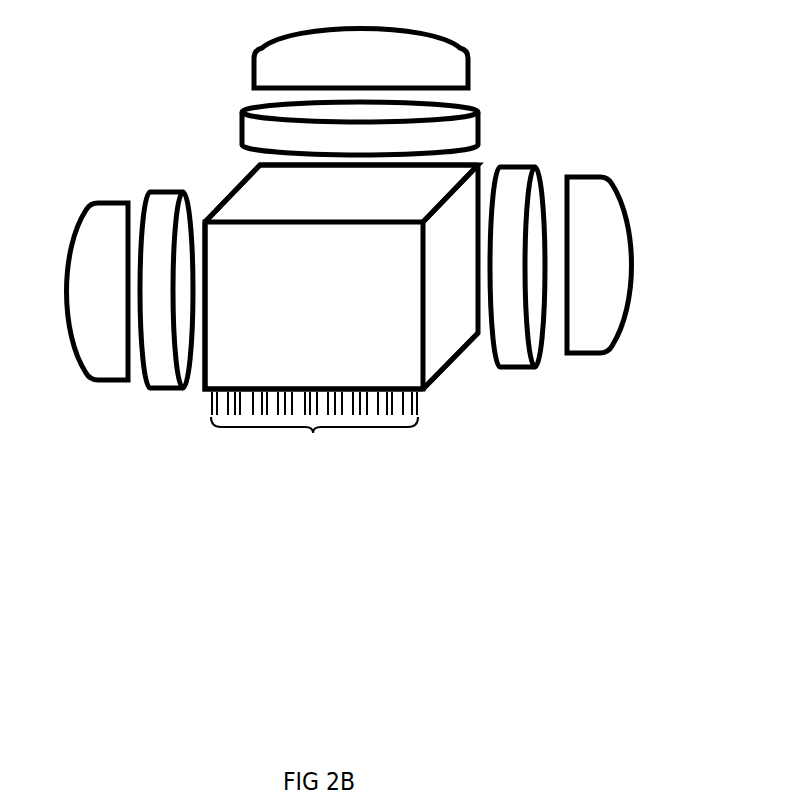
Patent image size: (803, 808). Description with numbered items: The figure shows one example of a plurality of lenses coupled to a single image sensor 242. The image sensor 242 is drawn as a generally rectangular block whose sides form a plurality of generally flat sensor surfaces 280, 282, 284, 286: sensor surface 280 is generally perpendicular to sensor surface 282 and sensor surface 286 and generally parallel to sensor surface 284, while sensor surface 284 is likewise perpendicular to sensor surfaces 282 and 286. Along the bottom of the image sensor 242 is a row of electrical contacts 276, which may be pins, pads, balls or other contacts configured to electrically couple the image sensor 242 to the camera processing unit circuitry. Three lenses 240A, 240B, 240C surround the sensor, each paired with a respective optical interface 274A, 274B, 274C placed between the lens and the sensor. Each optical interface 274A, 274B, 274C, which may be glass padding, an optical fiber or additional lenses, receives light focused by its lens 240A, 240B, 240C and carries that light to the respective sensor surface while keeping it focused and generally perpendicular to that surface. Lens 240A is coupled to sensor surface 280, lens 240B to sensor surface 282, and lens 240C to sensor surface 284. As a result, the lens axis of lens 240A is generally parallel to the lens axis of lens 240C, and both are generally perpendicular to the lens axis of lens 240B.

The lens 240A is at (630, 227).
The lens 240B is at (418, 33).
The lens 240C is at (67, 278).
The optical interface 274A is at (512, 165).
The optical interface 274B is at (482, 117).
The optical interface 274C is at (147, 200).
The image sensor 242 is at (441, 398).
The electrical contacts 276 is at (314, 427).
The sensor surface 280 is at (449, 328).
The sensor surface 282 is at (439, 189).
The sensor surface 284 is at (231, 193).
The sensor surface 286 is at (236, 369).